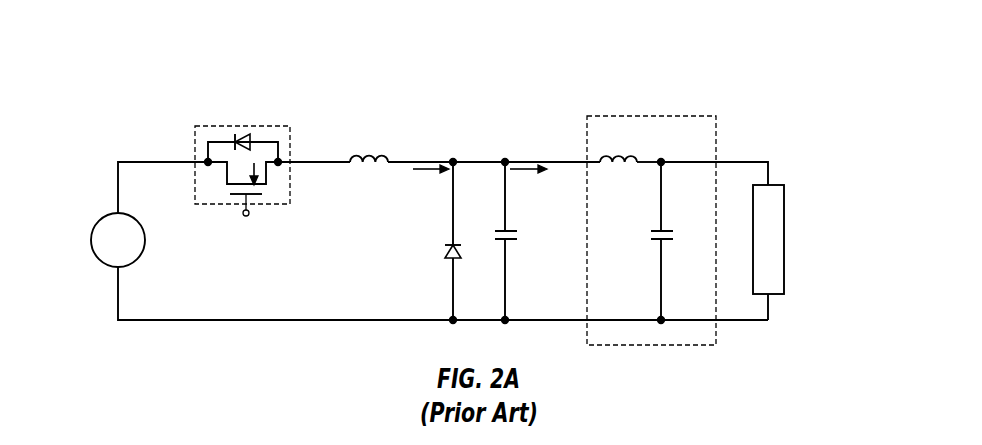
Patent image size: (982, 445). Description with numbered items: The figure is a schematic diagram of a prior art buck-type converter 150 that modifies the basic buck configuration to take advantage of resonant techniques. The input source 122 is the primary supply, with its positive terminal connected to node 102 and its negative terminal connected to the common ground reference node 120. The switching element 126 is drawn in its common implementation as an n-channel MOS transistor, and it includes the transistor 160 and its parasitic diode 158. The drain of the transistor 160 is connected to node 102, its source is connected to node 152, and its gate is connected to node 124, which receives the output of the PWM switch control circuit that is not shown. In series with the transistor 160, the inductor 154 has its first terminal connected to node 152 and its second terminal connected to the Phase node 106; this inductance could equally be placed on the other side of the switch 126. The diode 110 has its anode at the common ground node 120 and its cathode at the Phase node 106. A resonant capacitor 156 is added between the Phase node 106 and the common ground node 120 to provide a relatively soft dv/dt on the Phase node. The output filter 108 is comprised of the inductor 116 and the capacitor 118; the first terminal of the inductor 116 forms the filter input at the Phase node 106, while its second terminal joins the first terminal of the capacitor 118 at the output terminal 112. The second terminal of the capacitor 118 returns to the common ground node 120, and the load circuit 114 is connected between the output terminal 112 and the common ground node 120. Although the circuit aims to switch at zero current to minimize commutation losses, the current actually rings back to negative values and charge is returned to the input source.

The buck-type converter 150 is at (710, 60).
The node 102 is at (141, 161).
The input source 122 is at (145, 248).
The common ground reference node 120 is at (255, 321).
The switching element 126 is at (258, 126).
The parasitic diode 158 is at (247, 136).
The transistor 160 is at (266, 183).
The node 124 is at (246, 217).
The node 152 is at (302, 161).
The inductor 154 is at (368, 166).
The Phase node 106 is at (475, 161).
The diode 110 is at (444, 256).
The resonant capacitor 156 is at (508, 242).
The output filter 108 is at (688, 116).
The inductor 116 is at (620, 167).
The capacitor 118 is at (658, 243).
The output terminal 112 is at (768, 161).
The load circuit 114 is at (785, 250).